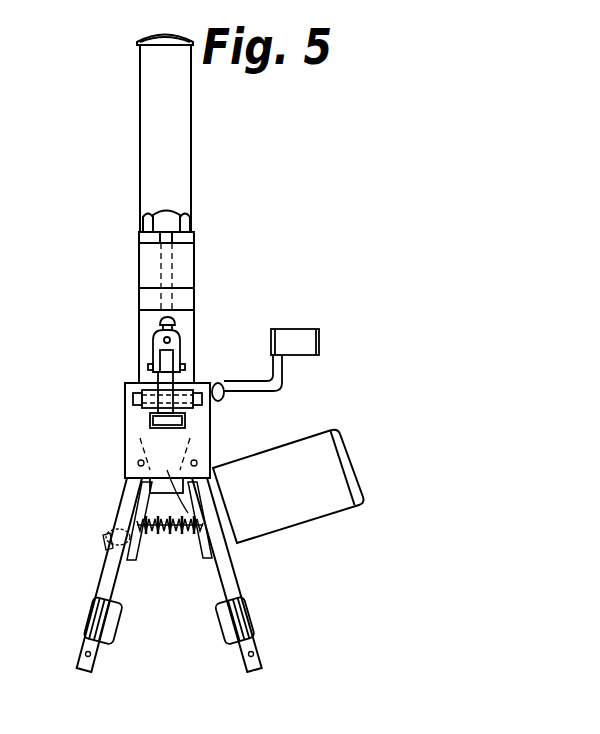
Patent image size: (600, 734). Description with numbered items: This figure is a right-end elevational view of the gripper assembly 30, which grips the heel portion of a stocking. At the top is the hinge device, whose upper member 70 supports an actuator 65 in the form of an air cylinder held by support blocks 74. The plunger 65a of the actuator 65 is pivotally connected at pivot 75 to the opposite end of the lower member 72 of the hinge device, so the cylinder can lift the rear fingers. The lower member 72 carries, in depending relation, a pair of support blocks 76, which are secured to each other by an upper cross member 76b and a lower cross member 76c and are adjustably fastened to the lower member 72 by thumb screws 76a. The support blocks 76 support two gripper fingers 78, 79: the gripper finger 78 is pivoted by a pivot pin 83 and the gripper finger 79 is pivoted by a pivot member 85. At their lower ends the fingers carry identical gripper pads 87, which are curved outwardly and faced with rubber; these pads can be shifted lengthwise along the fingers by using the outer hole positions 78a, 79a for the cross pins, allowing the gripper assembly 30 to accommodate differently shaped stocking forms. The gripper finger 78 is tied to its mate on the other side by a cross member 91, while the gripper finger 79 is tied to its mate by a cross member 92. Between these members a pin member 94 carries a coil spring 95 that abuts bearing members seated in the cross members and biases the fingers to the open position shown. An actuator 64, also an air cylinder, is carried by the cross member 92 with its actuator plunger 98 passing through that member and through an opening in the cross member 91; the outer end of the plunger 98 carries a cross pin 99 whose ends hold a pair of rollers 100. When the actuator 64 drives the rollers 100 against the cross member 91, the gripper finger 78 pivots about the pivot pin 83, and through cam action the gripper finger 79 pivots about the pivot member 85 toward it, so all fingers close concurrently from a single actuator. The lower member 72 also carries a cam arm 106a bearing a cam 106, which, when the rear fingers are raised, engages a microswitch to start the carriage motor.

The gripper assembly 30 is at (183, 628).
The actuator 64 is at (310, 453).
The actuator 65 is at (168, 127).
The plunger 65a is at (175, 323).
The upper member 70 is at (182, 300).
The lower member 72 is at (147, 395).
The support blocks 74 is at (183, 268).
The pivot 75 is at (135, 400).
The support blocks 76 is at (140, 428).
The thumb screws 76a is at (218, 383).
The upper cross member 76b is at (177, 422).
The lower cross member 76c is at (157, 488).
The gripper finger 78 is at (108, 585).
The outer hole position 78a is at (92, 655).
The gripper finger 79 is at (227, 572).
The outer hole position 79a is at (253, 653).
The pivot pin 83 is at (138, 465).
The pivot member 85 is at (197, 462).
The gripper pads 87 is at (237, 613).
The cross member 91 is at (134, 560).
The cross member 92 is at (207, 548).
The pin member 94 is at (172, 534).
The coil spring 95 is at (163, 531).
The actuator plunger 98 is at (172, 460).
The cross pin 99 is at (105, 542).
The rollers 100 is at (105, 533).
The cam 106 is at (291, 338).
The cam arm 106a is at (282, 376).